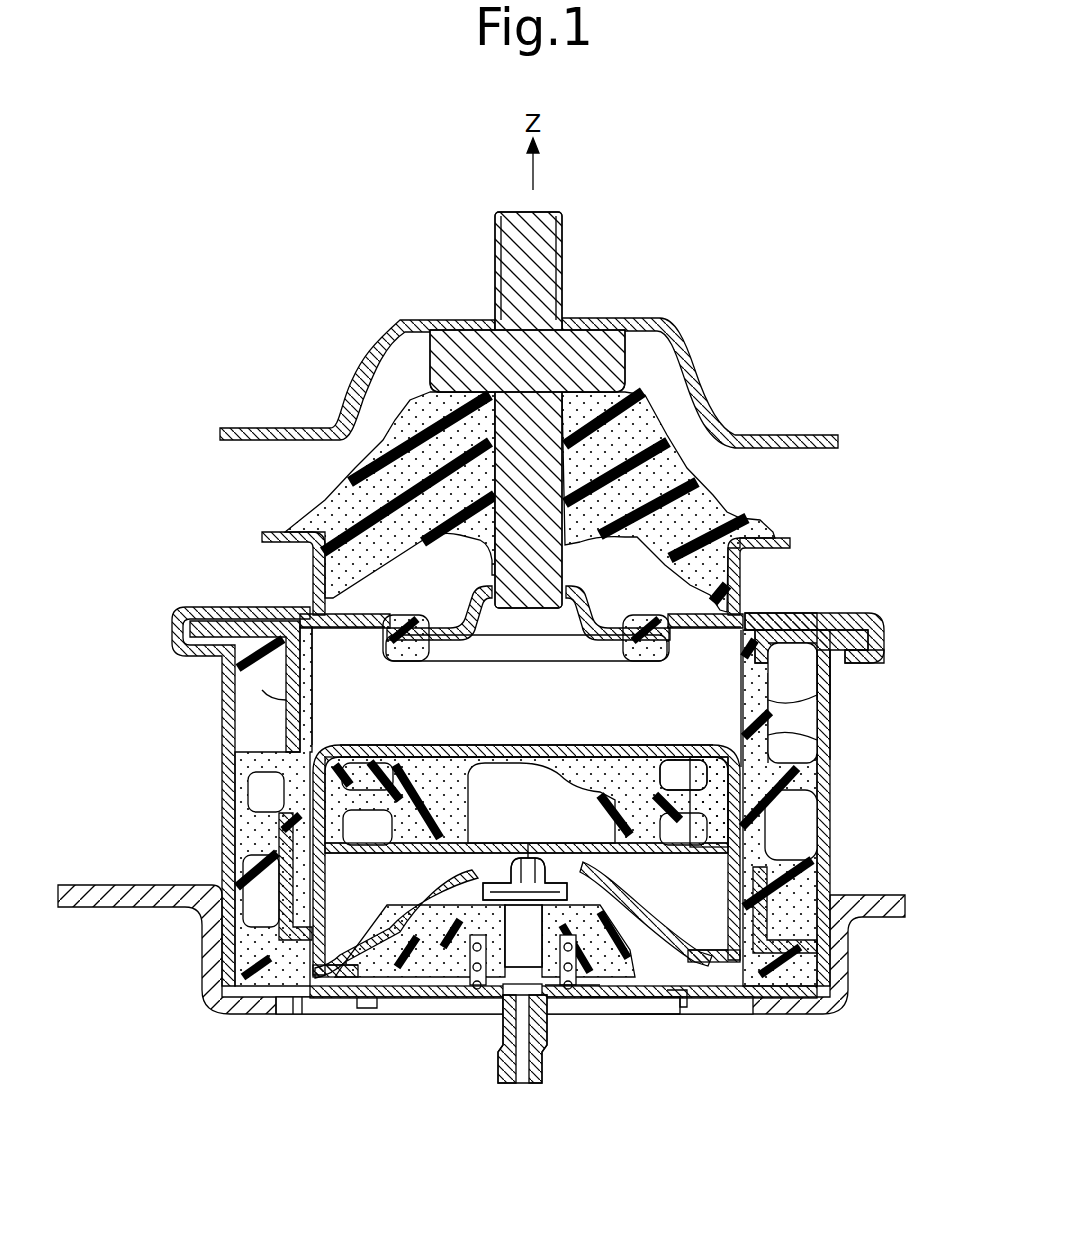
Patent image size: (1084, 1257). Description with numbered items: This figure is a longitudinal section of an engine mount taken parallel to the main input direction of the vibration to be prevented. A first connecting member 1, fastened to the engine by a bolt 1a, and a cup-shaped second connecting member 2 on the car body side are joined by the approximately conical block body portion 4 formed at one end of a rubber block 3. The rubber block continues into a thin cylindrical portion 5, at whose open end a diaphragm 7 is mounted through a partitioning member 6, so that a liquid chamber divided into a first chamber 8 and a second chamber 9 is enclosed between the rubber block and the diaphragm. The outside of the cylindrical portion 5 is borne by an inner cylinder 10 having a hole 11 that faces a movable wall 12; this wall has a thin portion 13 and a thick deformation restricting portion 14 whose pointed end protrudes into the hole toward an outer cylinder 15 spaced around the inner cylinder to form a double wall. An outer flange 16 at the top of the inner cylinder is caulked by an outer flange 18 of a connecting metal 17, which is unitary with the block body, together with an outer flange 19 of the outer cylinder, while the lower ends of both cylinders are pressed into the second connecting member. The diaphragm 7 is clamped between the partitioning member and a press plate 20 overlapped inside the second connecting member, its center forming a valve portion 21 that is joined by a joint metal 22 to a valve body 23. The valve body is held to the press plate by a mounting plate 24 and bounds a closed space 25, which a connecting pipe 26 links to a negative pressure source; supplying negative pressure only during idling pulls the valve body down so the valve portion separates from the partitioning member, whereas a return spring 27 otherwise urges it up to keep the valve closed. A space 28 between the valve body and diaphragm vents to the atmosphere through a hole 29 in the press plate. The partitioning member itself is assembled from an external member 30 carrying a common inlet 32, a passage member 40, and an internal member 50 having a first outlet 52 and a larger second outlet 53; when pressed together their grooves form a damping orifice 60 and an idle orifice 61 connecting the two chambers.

The first connecting member 1 is at (590, 352).
The bolt 1a is at (549, 252).
The second connecting member 2 is at (227, 1010).
The rubber block 3 is at (341, 479).
The block body portion 4 is at (695, 512).
The cylindrical portion 5 is at (741, 684).
The partitioning member 6 is at (454, 747).
The diaphragm 7 is at (381, 900).
The first chamber 8 is at (556, 706).
The second chamber 9 is at (700, 899).
The inner cylinder 10 is at (262, 712).
The hole 11 is at (835, 688).
The movable wall 12 is at (749, 710).
The thin portion 13 is at (832, 725).
The deformation restricting portion 14 is at (800, 760).
The outer cylinder 15 is at (824, 822).
The outer flange 16 is at (836, 640).
The connecting metal 17 is at (808, 614).
The outer flange 18 is at (882, 654).
The outer flange 19 is at (873, 652).
The press plate 20 is at (306, 998).
The valve portion 21 is at (470, 886).
The joint metal 22 is at (501, 837).
The valve body 23 is at (574, 927).
The mounting plate 24 is at (640, 1020).
The closed space 25 is at (593, 1007).
The connecting pipe 26 is at (492, 1036).
The return spring 27 is at (557, 1007).
The space 28 is at (618, 904).
The hole 29 is at (703, 1000).
The external member 30 is at (498, 745).
The common inlet 32 is at (684, 753).
The passage member 40 is at (435, 772).
The internal member 50 is at (610, 837).
The first outlet 52 is at (340, 862).
The second outlet 53 is at (484, 842).
The damping orifice 60 is at (363, 777).
The idle orifice 61 is at (598, 797).